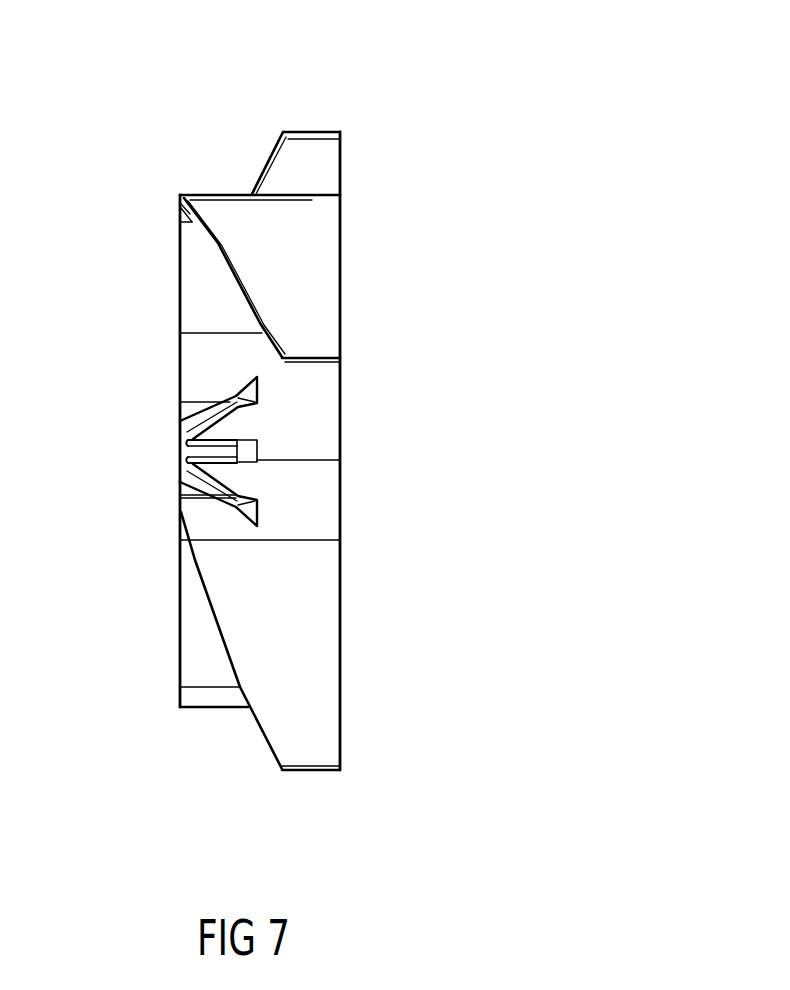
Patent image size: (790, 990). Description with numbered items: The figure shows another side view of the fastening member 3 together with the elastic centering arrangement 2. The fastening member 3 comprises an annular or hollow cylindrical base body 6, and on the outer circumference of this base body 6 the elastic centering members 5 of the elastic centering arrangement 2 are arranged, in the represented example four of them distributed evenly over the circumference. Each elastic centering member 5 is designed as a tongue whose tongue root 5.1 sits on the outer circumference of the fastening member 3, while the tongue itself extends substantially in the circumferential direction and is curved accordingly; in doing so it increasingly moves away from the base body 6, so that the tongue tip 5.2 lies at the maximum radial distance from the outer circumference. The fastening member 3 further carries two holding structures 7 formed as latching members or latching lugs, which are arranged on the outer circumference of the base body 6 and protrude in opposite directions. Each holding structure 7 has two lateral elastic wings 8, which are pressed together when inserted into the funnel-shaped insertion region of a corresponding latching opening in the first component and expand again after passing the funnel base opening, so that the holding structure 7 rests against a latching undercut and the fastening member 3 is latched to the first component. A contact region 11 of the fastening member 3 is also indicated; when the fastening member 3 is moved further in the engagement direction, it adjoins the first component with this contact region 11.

The elastic centering arrangement 2 is at (391, 277).
The fastening member 3 is at (384, 95).
The elastic centering member 5 is at (332, 253).
The tongue root 5.1 is at (332, 508).
The tongue tip 5.2 is at (333, 356).
The base body 6 is at (180, 270).
The holding structure 7 is at (186, 452).
The elastic wing 8 is at (232, 394).
The contact region 11 is at (161, 623).